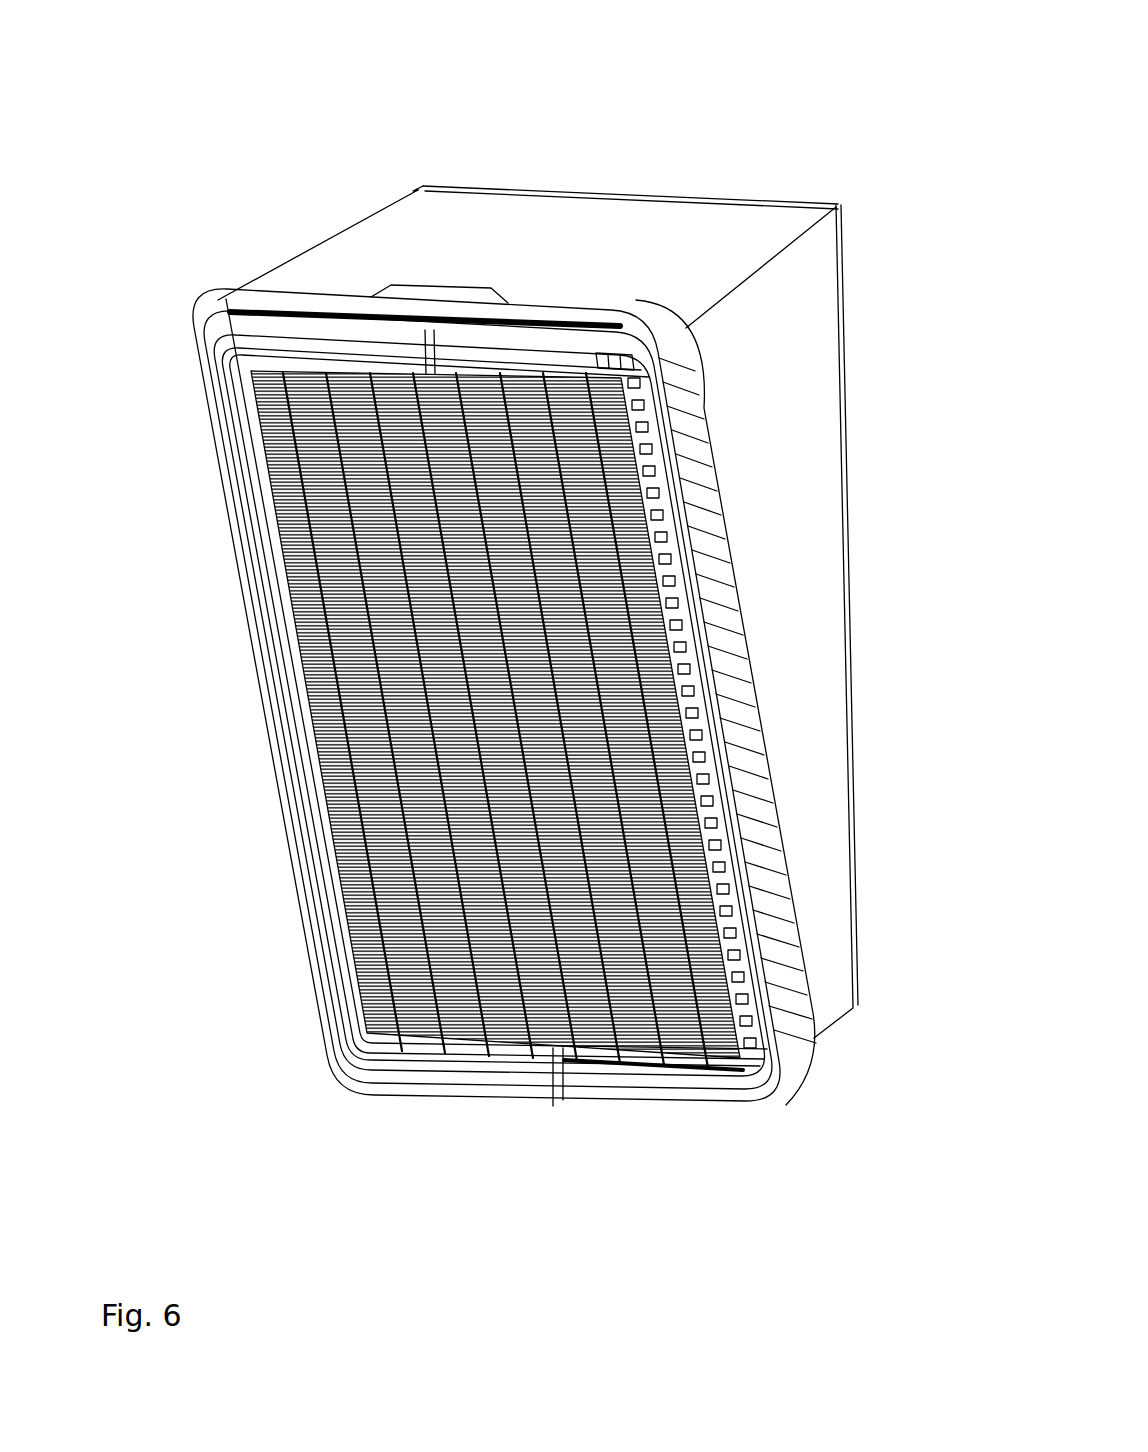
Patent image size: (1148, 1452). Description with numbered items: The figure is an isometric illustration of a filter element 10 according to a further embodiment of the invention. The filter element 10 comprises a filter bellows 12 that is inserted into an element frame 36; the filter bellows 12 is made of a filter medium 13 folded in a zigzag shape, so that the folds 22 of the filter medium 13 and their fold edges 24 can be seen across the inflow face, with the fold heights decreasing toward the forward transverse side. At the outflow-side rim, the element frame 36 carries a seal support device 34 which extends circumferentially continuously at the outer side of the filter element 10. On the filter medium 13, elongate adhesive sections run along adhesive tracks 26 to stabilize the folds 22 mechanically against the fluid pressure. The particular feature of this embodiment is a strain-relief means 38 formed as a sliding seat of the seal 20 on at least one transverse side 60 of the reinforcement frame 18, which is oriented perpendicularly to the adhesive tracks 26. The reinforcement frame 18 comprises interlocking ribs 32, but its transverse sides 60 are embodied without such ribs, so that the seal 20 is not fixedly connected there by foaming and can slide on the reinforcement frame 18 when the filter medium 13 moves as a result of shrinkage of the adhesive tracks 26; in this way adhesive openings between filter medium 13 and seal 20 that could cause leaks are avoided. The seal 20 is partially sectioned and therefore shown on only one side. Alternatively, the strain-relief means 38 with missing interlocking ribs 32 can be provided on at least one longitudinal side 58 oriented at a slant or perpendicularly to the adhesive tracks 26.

The filter element 10 is at (744, 100).
The filter bellows 12 is at (553, 395).
The filter medium 13 is at (243, 400).
The reinforcement frame 18 is at (607, 350).
The seal 20 is at (214, 322).
The folds 22 is at (283, 550).
The fold edges 24 is at (262, 440).
The adhesive tracks 26 is at (328, 632).
The interlocking ribs 32 is at (635, 422).
The seal support device 34 is at (700, 462).
The element frame 36 is at (443, 195).
The strain-relief means 38 is at (514, 355).
The longitudinal side 58 is at (246, 738).
The transverse side 60 is at (315, 293).